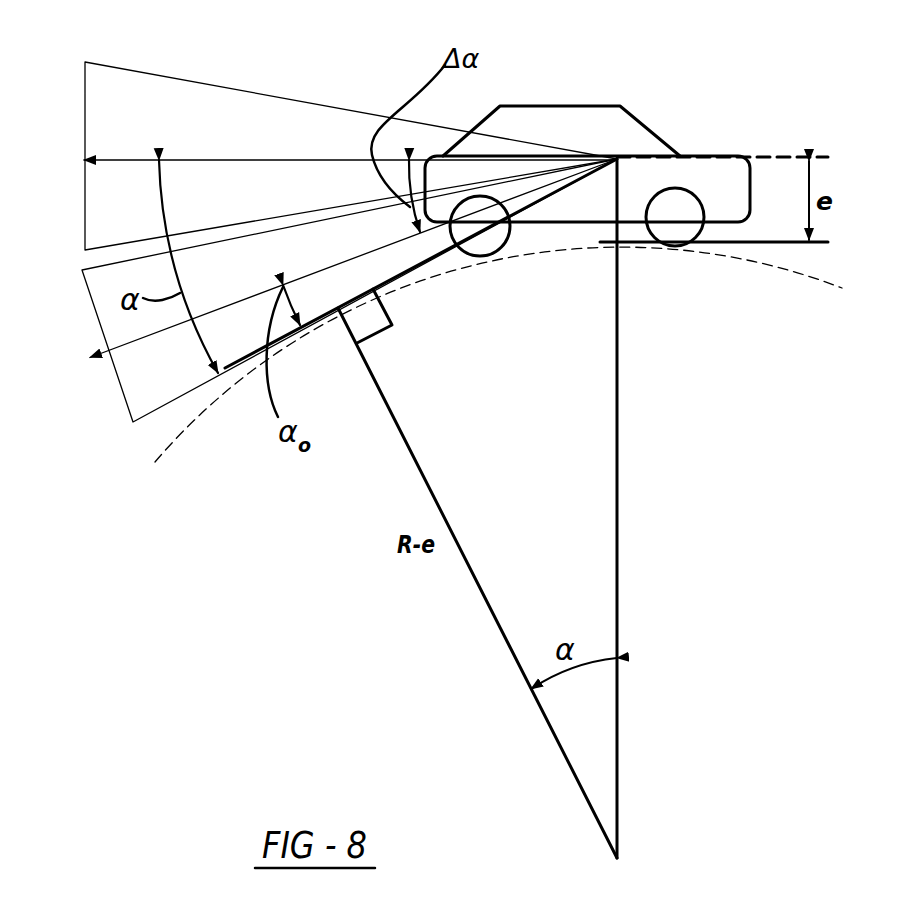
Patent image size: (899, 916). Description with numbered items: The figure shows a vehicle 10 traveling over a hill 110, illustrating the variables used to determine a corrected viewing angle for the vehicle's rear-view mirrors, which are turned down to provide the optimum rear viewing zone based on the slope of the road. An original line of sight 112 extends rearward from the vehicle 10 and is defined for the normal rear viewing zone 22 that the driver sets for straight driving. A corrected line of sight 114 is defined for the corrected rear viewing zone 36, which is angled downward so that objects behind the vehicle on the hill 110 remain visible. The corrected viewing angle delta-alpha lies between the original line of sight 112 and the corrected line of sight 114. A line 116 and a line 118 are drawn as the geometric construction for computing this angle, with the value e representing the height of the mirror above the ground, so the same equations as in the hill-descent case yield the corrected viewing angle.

The vehicle 10 is at (708, 156).
The normal rear viewing zone 22 is at (247, 90).
The corrected rear viewing zone 36 is at (90, 298).
The hill 110 is at (812, 278).
The original line of sight 112 is at (125, 162).
The corrected line of sight 114 is at (153, 336).
The line 116 is at (620, 440).
The line 118 is at (497, 635).